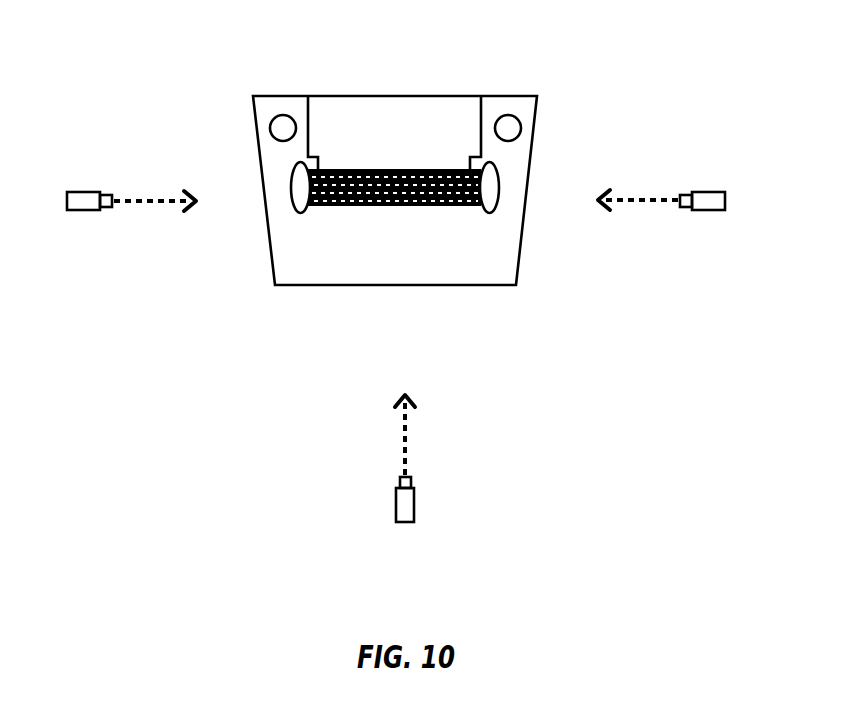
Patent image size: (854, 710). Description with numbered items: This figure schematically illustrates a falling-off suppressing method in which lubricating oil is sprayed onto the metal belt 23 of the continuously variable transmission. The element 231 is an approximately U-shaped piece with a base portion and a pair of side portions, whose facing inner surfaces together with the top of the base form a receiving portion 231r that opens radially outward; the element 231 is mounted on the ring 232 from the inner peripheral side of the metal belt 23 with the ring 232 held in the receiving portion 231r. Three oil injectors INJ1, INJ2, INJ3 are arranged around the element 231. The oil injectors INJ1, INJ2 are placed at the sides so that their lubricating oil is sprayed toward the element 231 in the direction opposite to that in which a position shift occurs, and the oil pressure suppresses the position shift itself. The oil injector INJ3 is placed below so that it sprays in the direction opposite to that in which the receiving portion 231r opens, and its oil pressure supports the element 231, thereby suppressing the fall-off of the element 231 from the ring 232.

The metal belt 23 is at (355, 265).
The element 231 is at (504, 96).
The receiving portion 231r is at (413, 135).
The ring 232 is at (358, 170).
The oil injector INJ1 is at (70, 190).
The oil injector INJ2 is at (713, 190).
The oil injector INJ3 is at (417, 505).